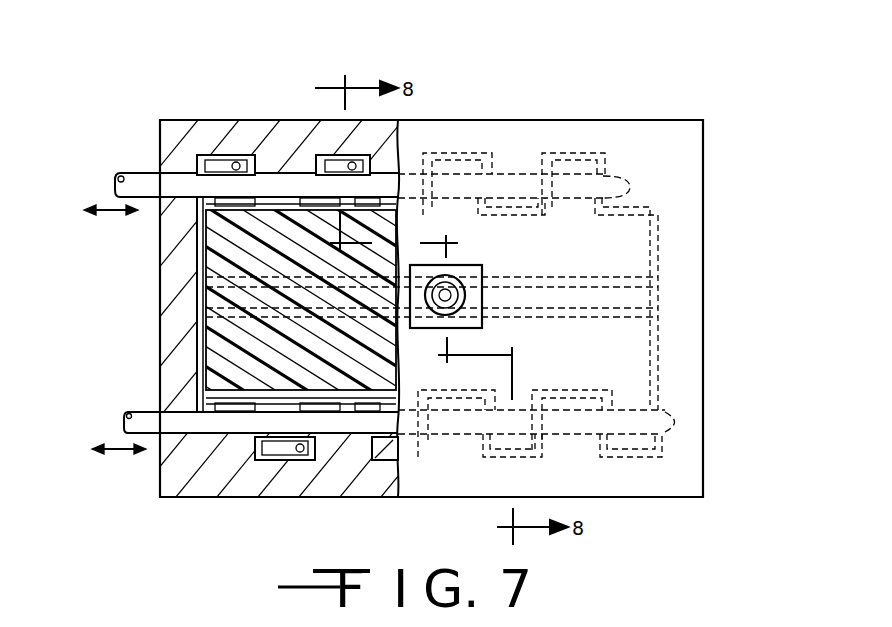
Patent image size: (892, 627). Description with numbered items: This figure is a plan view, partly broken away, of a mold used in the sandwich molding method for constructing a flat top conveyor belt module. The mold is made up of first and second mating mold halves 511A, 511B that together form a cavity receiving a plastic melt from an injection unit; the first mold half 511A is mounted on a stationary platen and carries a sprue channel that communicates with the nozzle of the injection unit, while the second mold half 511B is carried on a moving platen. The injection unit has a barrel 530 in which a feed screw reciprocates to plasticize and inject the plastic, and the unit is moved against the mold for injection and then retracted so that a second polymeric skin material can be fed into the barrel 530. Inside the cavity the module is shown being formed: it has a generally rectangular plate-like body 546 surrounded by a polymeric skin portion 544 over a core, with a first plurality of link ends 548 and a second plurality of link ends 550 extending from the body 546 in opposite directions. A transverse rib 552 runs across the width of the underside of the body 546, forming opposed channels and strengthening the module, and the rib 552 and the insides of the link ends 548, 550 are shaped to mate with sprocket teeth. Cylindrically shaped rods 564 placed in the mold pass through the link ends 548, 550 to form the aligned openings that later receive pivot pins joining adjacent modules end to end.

The first mold half 511A is at (680, 152).
The second mold half 511B is at (232, 138).
The barrel 530 is at (460, 288).
The skin portion 544 is at (200, 236).
The plate-like body 546 is at (200, 256).
The first plurality of link ends 548 is at (285, 455).
The second plurality of link ends 550 is at (240, 158).
The transverse rib 552 is at (205, 299).
The rods 564 is at (138, 184).